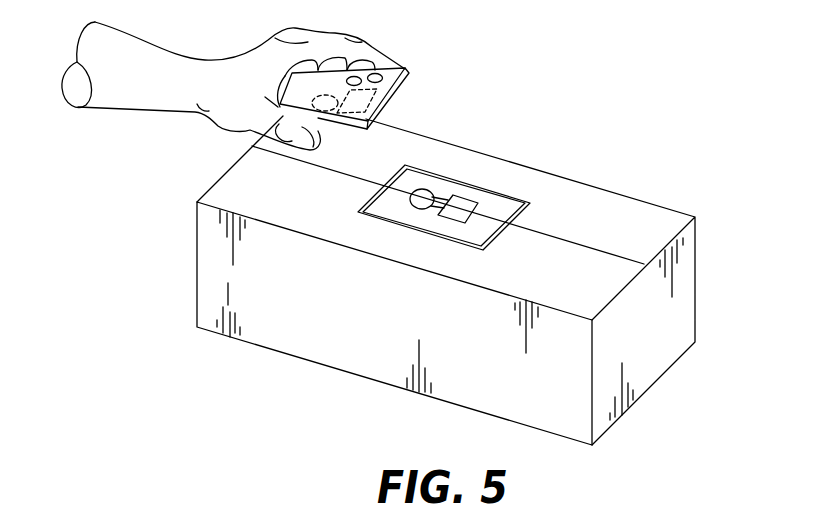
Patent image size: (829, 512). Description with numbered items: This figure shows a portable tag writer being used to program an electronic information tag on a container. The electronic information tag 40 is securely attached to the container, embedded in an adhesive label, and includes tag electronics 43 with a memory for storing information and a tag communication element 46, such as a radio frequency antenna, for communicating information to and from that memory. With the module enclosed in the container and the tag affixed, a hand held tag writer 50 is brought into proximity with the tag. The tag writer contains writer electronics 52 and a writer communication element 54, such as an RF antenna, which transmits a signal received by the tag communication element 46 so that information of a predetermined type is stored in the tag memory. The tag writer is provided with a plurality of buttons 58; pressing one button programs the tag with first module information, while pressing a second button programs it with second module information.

The electronic information tag 40 is at (468, 174).
The tag electronics 43 is at (467, 195).
The tag communication element 46 is at (426, 189).
The hand held tag writer 50 is at (330, 151).
The writer electronics 52 is at (349, 121).
The writer communication element 54 is at (313, 105).
The buttons 58 is at (377, 73).